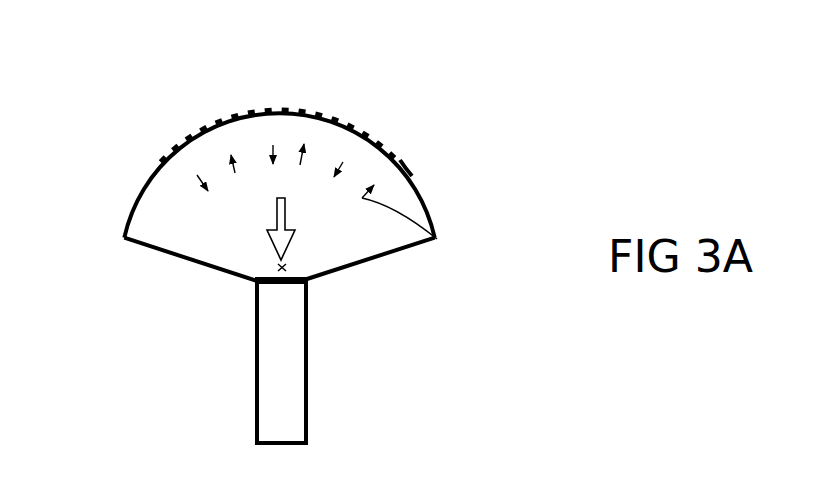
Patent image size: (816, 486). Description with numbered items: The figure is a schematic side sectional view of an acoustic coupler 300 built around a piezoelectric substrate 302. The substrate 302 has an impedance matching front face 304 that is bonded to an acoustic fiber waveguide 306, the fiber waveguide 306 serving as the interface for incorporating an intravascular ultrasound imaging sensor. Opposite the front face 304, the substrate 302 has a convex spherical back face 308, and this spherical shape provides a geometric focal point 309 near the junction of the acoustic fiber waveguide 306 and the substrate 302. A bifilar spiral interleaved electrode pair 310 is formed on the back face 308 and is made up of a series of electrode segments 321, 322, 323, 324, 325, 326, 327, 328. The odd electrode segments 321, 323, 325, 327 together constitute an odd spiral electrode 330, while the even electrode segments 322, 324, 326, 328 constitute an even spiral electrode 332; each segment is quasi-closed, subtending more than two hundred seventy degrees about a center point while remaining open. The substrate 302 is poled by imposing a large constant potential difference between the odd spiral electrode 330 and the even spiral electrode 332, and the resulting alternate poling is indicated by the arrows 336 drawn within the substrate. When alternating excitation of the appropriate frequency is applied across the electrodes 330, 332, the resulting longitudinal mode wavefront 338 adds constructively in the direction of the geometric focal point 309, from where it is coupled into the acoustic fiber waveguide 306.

The acoustic coupler 300 is at (428, 134).
The piezoelectric substrate 302 is at (185, 229).
The impedance matching front face 304 is at (285, 288).
The acoustic fiber waveguide 306 is at (298, 380).
The convex spherical back face 308 is at (428, 208).
The geometric focal point 309 is at (281, 268).
The bifilar spiral interleaved electrode pair 310 is at (148, 170).
The electrode segment 321 is at (268, 107).
The electrode segment 322 is at (251, 109).
The electrode segment 323 is at (234, 113).
The electrode segment 324 is at (217, 119).
The electrode segment 325 is at (202, 126).
The electrode segment 326 is at (187, 135).
The electrode segment 327 is at (173, 145).
The electrode segment 328 is at (161, 157).
The odd spiral electrode 330 is at (394, 151).
The even spiral electrode 332 is at (403, 162).
The arrows 336 is at (437, 239).
The longitudinal mode wavefront 338 is at (285, 215).